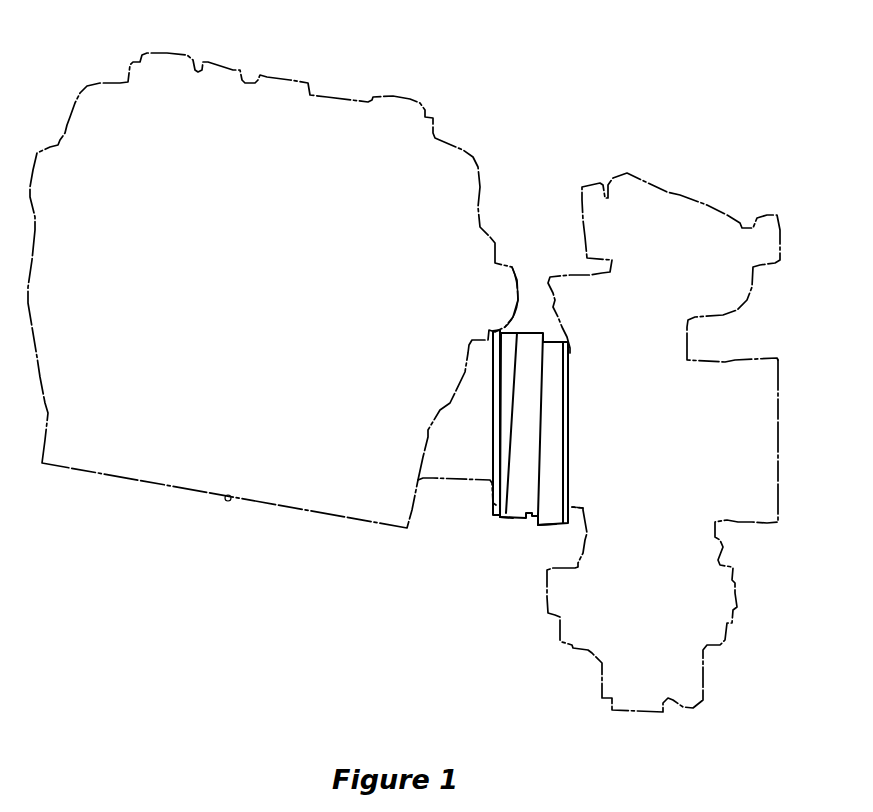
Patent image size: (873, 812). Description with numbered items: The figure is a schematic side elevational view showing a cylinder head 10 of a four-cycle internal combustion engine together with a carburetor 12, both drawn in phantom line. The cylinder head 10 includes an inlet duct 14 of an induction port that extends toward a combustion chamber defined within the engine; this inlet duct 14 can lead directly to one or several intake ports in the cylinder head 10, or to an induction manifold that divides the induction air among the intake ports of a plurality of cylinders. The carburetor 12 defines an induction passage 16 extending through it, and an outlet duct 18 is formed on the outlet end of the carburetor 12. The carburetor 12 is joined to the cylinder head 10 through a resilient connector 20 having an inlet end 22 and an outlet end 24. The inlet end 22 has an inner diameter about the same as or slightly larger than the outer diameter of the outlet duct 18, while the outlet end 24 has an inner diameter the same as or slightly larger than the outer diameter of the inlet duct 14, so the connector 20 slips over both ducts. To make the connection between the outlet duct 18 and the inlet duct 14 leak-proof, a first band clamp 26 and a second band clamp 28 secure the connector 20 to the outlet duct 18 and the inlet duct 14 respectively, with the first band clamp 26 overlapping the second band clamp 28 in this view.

The cylinder head 10 is at (270, 77).
The carburetor 12 is at (705, 205).
The inlet duct 14 is at (432, 478).
The induction passage 16 is at (765, 393).
The outlet duct 18 is at (568, 525).
The resilient connector 20 is at (507, 347).
The inlet end 22 is at (570, 399).
The outlet end 24 is at (493, 372).
The first band clamp 26 is at (513, 518).
The second band clamp 28 is at (548, 525).